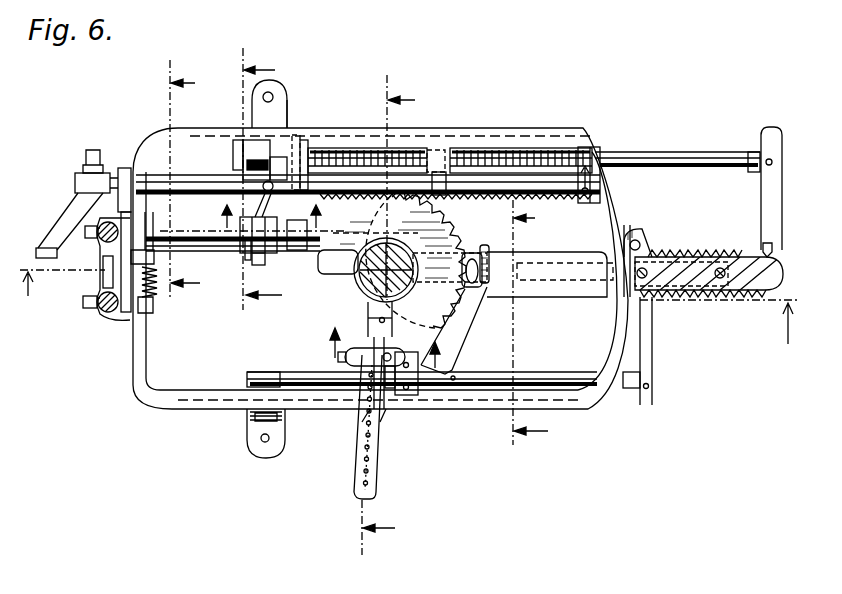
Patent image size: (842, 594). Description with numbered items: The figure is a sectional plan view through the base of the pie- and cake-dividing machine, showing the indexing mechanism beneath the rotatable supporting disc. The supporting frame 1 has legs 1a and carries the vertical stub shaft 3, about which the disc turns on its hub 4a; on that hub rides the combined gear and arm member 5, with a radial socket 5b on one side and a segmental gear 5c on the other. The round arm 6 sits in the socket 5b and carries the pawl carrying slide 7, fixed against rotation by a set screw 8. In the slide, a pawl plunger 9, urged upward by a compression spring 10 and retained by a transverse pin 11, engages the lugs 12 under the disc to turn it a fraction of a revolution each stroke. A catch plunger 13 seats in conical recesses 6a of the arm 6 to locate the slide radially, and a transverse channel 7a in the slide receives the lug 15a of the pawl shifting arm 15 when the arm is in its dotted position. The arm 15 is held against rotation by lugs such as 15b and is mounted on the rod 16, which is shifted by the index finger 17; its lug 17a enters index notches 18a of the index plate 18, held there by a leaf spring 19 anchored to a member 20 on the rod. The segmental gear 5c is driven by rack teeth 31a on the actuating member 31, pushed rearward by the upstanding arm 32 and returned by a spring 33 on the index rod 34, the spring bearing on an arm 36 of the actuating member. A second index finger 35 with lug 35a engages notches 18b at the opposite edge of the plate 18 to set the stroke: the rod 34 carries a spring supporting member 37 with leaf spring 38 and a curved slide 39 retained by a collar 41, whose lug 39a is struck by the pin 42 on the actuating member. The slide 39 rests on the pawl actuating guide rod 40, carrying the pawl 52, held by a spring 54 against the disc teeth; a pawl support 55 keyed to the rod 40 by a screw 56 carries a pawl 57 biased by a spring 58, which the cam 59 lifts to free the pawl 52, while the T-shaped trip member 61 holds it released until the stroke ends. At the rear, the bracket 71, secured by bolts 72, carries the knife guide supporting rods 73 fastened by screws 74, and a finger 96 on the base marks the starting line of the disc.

The supporting frame 1 is at (178, 410).
The legs 1a is at (248, 440).
The vertical stub shaft 3 is at (372, 270).
The hub 4a is at (368, 292).
The combined gear and arm member 5 is at (370, 306).
The radially directed socket 5b is at (368, 321).
The segmental gear 5c is at (477, 284).
The arm 6 is at (357, 488).
The conical recesses 6a is at (359, 470).
The pawl carrying slide 7 is at (335, 385).
The transverse channel 7a is at (355, 395).
The set screw 8 is at (300, 360).
The pawl plunger 9 is at (390, 350).
The compression spring 10 is at (254, 215).
The transverse pin 11 is at (185, 183).
The lugs 12 is at (534, 328).
The catch plunger 13 is at (335, 447).
The pawl shifting arm 15 is at (468, 337).
The lug 15a is at (476, 278).
The lug 15b is at (489, 252).
The rod 16 is at (497, 388).
The index finger 17 is at (653, 392).
The lug 17a is at (645, 300).
The index plate 18 is at (745, 278).
The index notches 18a is at (716, 297).
The notches 18b is at (682, 252).
The leaf spring 19 is at (412, 396).
The member 20 is at (393, 390).
The actuating member 31 is at (463, 178).
The rack teeth 31a is at (472, 192).
The arm 32 is at (75, 210).
The spring 33 is at (340, 165).
The index rod 34 is at (655, 160).
The index finger 35 is at (770, 135).
The lug 35a is at (764, 248).
The arm 36 is at (587, 167).
The spring supporting member 37 is at (235, 138).
The leaf spring 38 is at (246, 140).
The slide 39 is at (283, 118).
The lug 39a is at (290, 127).
The pawl actuating guide rod 40 is at (205, 248).
The collar 41 is at (295, 133).
The pin 42 is at (252, 140).
The pawl 52 is at (140, 258).
The spring 54 is at (135, 300).
The pawl support 55 is at (258, 253).
The screw 56 is at (262, 265).
The pawl 57 is at (240, 248).
The spring 58 is at (255, 265).
The cam 59 is at (243, 190).
The T-shaped trip member 61 is at (126, 168).
The knife guide supporting rod bracket 71 is at (115, 314).
The bolts 72 is at (104, 276).
The knife guide supporting rods 73 is at (100, 312).
The screws 74 is at (85, 305).
The finger 96 is at (637, 238).